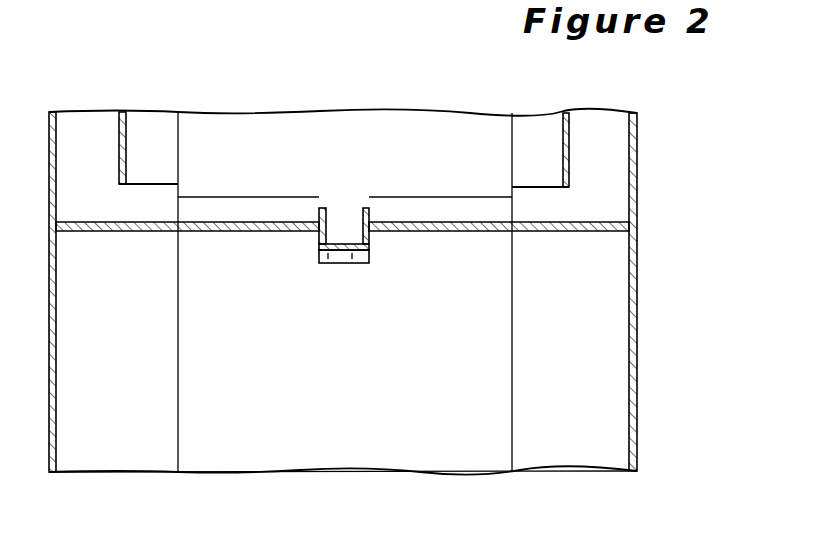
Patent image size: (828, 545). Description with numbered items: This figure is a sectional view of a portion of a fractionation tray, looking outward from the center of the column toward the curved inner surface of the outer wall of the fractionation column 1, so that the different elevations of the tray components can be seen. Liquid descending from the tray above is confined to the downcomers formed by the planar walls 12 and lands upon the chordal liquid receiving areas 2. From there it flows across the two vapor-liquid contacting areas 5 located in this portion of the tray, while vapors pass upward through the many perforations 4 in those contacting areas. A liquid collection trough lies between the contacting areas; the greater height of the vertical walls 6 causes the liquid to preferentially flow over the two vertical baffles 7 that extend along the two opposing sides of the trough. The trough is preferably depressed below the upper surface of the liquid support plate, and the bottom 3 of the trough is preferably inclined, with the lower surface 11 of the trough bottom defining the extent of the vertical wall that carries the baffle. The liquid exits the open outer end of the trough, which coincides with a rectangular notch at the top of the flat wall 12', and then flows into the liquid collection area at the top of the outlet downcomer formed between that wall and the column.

The fractionation column 1 is at (641, 216).
The chordal liquid receiving area 2 is at (83, 230).
The bottom of the trough 3 is at (343, 260).
The perforations 4 is at (259, 232).
The vapor-liquid contacting area 5 is at (218, 222).
The vertical wall 6 is at (485, 198).
The vertical baffle 7 is at (325, 209).
The lower surface of the bottom of the trough 11 is at (348, 243).
The planar wall 12 is at (365, 126).
The flat wall 12' is at (343, 468).